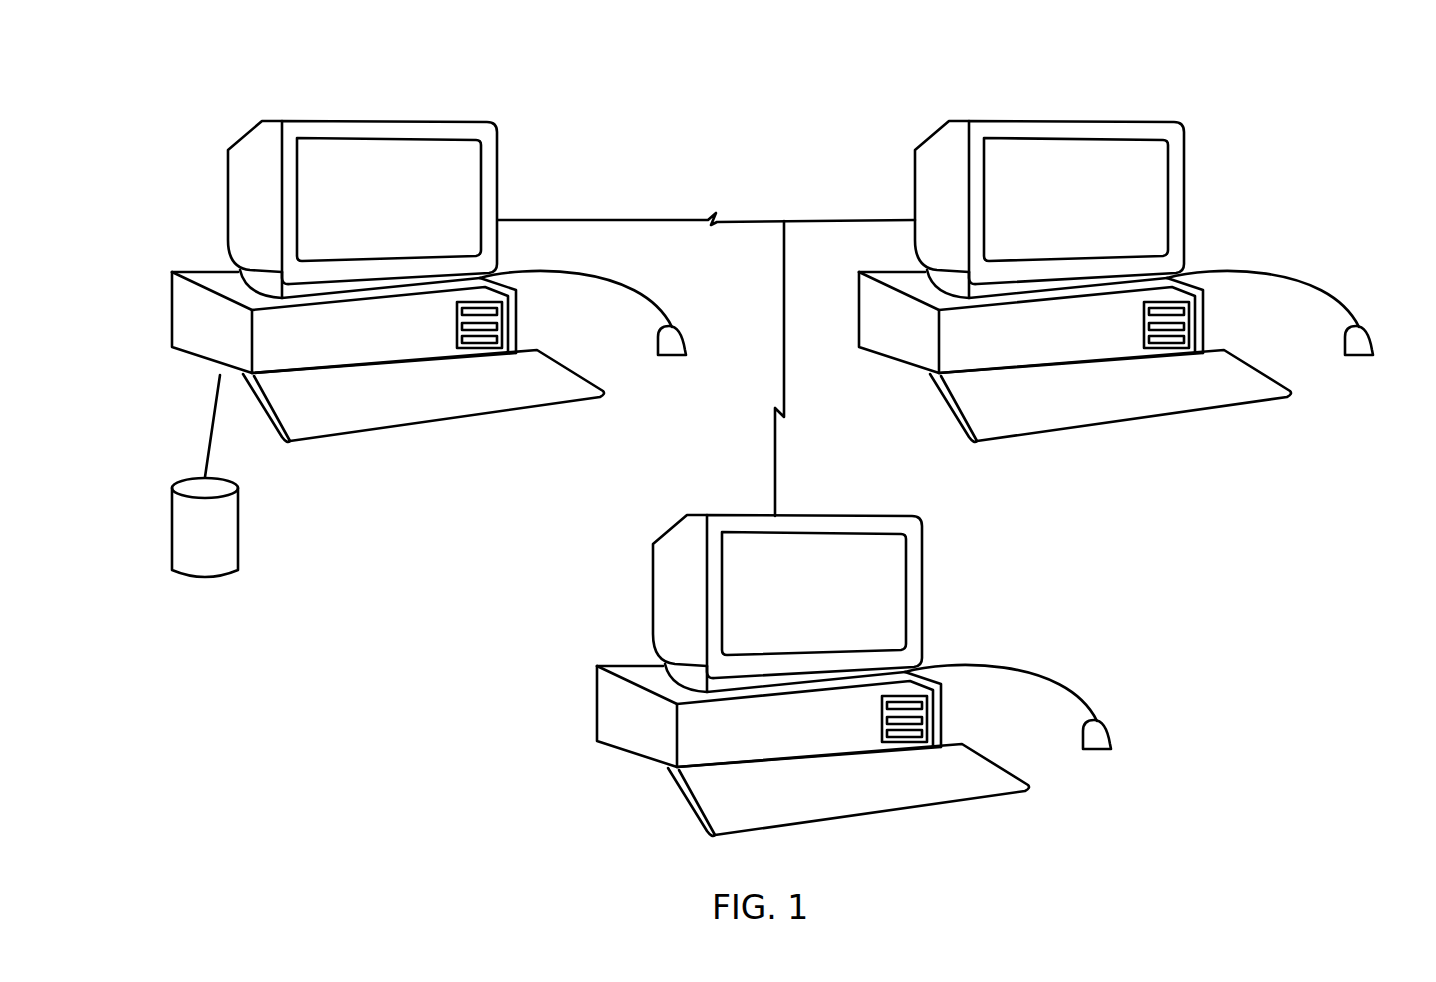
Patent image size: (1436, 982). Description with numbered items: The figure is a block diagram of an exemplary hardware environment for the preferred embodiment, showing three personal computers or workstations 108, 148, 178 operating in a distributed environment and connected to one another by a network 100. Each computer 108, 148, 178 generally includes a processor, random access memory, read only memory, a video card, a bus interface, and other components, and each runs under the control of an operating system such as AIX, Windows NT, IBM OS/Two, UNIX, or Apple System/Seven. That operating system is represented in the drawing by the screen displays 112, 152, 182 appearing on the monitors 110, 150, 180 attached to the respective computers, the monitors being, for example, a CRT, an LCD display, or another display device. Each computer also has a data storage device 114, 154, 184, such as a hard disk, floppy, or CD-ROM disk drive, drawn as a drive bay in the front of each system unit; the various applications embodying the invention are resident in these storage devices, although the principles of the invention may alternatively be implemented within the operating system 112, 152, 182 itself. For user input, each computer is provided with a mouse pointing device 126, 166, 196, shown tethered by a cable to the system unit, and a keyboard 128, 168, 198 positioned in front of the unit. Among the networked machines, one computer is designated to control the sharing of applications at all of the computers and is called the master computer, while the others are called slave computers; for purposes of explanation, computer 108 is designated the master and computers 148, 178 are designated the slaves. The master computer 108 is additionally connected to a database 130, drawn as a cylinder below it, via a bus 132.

The network 100 is at (712, 215).
The computer 108 is at (397, 105).
The monitor 110 is at (452, 123).
The screen display 112 is at (465, 197).
The data storage device 114 is at (497, 332).
The mouse pointing device 126 is at (676, 346).
The keyboard 128 is at (425, 412).
The database 130 is at (220, 538).
The bus 132 is at (210, 432).
The computer 148 is at (1140, 266).
The monitor 150 is at (1086, 194).
The screen display 152 is at (1121, 199).
The data storage device 154 is at (1210, 325).
The mouse pointing device 166 is at (1294, 333).
The keyboard 168 is at (1110, 412).
The computer 178 is at (879, 660).
The monitor 180 is at (824, 588).
The screen display 182 is at (859, 593).
The data storage device 184 is at (947, 719).
The mouse pointing device 196 is at (1033, 727).
The keyboard 198 is at (848, 806).